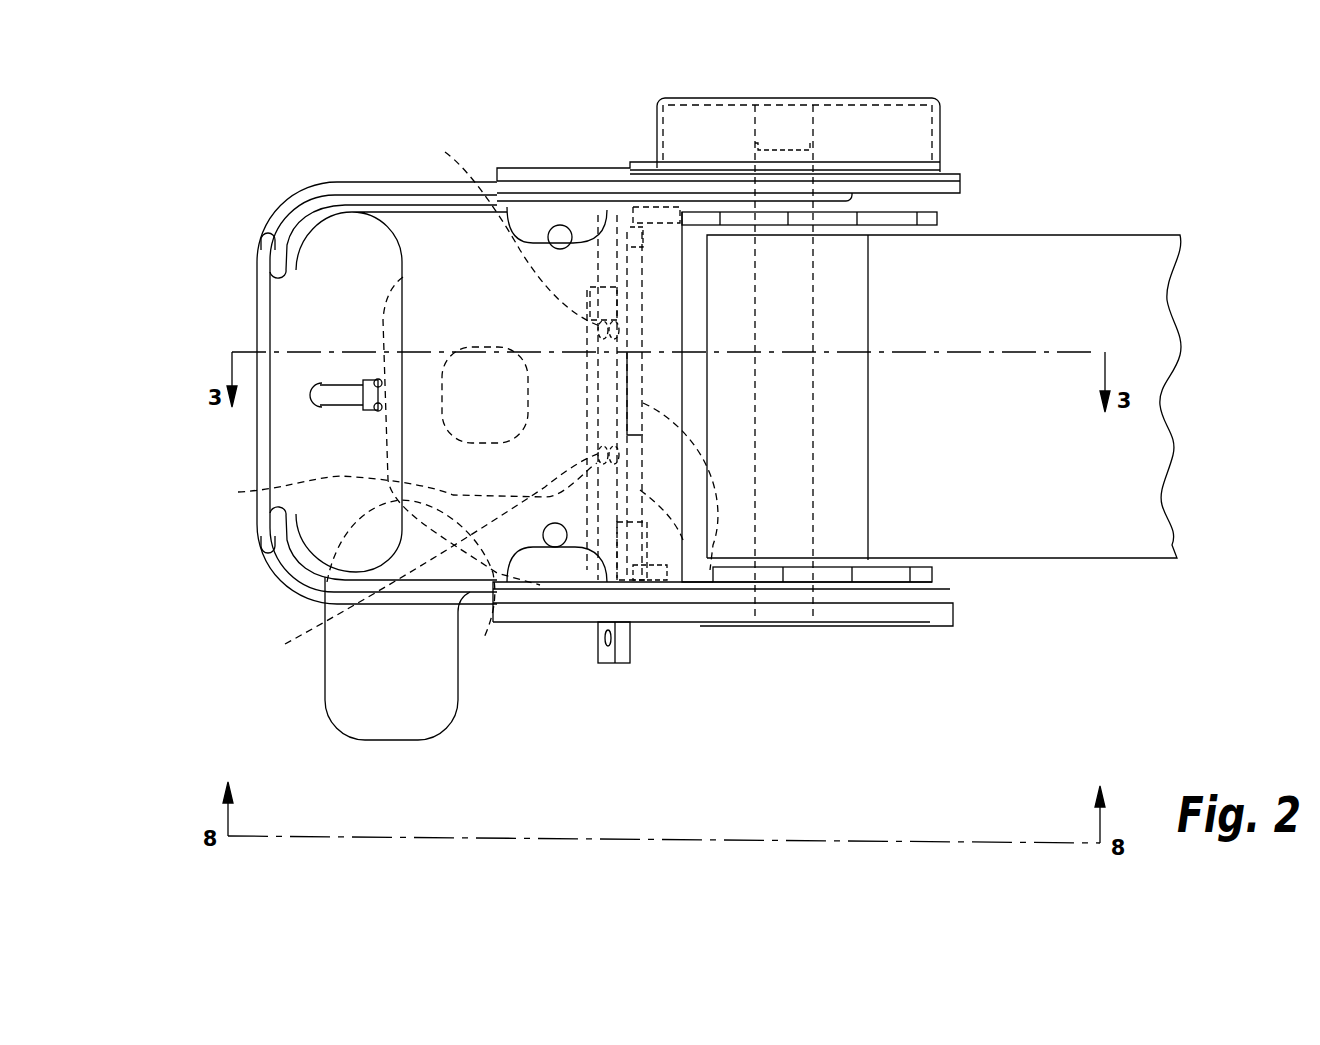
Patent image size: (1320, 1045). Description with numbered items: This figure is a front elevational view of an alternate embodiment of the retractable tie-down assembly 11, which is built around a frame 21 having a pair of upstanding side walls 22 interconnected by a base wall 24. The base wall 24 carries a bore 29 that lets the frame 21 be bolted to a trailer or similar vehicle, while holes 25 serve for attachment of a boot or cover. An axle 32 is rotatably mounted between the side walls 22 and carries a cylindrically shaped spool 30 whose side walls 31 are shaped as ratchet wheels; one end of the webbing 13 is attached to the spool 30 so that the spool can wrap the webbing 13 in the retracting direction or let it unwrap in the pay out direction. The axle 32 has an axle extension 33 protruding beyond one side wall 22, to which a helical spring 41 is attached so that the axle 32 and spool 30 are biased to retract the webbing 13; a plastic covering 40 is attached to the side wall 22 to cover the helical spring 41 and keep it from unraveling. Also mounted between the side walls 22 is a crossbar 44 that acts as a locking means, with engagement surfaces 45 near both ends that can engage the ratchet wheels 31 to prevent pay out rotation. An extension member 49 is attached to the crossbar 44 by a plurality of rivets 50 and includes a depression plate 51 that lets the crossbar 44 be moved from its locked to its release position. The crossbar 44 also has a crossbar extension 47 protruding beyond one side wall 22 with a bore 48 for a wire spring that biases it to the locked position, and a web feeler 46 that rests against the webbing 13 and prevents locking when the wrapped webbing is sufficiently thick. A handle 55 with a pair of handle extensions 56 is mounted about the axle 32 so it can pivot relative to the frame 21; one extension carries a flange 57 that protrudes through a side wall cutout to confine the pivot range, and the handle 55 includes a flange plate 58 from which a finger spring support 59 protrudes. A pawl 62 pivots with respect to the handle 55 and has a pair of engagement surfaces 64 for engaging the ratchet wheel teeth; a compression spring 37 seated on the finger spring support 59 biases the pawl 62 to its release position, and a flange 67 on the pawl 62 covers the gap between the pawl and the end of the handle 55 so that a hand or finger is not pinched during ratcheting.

The retractable tie-down assembly 11 is at (262, 148).
The webbing 13 is at (1140, 235).
The frame 21 is at (498, 168).
The upstanding side walls 22 is at (962, 183).
The base wall 24 is at (497, 205).
The holes 25 is at (548, 236).
The bore 29 is at (440, 413).
The spool 30 is at (893, 583).
The side walls 31 is at (940, 220).
The axle 32 is at (750, 598).
The axle extension 33 is at (814, 128).
The compression spring 37 is at (320, 385).
The plastic covering 40 is at (692, 98).
The helical spring 41 is at (870, 141).
The crossbar 44 is at (680, 585).
The engagement surfaces 45 is at (623, 220).
The web feeler 46 is at (710, 585).
The crossbar extension 47 is at (615, 665).
The bore 48 is at (607, 646).
The extension member 49 is at (393, 483).
The rivets 50 is at (428, 402).
The depression plate 51 is at (403, 710).
The handle 55 is at (286, 232).
The handle extensions 56 is at (852, 201).
The flange 57 is at (905, 598).
The flange plate 58 is at (377, 210).
The finger spring support 59 is at (320, 405).
The pawl 62 is at (470, 605).
The engagement surfaces 64 is at (683, 220).
The flange 67 is at (262, 298).